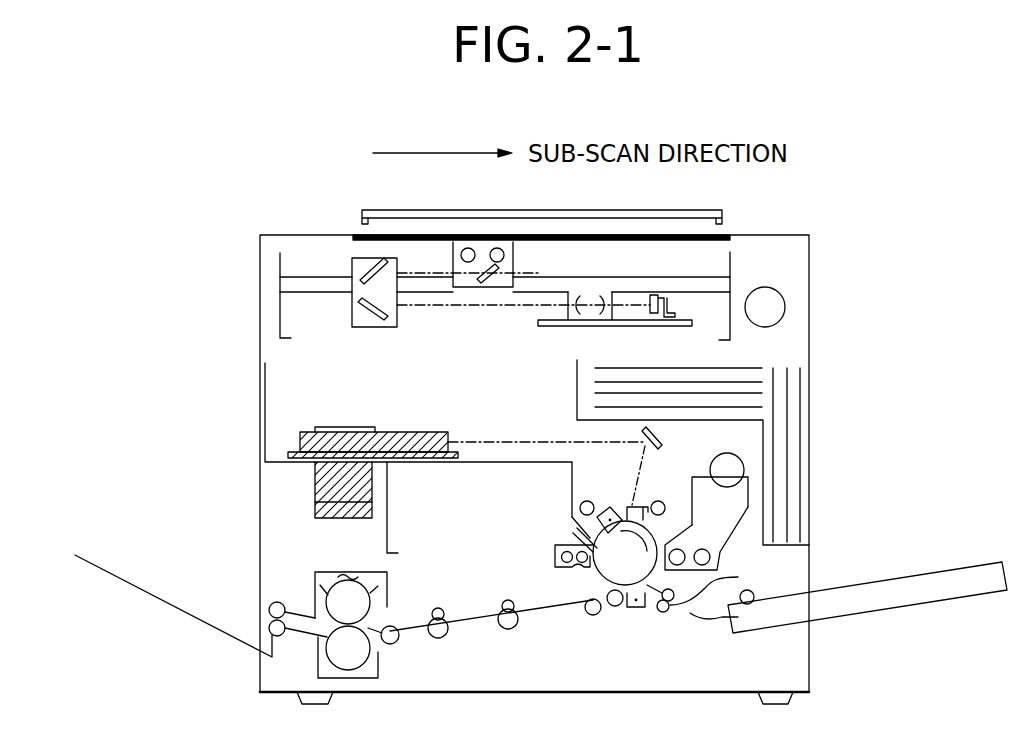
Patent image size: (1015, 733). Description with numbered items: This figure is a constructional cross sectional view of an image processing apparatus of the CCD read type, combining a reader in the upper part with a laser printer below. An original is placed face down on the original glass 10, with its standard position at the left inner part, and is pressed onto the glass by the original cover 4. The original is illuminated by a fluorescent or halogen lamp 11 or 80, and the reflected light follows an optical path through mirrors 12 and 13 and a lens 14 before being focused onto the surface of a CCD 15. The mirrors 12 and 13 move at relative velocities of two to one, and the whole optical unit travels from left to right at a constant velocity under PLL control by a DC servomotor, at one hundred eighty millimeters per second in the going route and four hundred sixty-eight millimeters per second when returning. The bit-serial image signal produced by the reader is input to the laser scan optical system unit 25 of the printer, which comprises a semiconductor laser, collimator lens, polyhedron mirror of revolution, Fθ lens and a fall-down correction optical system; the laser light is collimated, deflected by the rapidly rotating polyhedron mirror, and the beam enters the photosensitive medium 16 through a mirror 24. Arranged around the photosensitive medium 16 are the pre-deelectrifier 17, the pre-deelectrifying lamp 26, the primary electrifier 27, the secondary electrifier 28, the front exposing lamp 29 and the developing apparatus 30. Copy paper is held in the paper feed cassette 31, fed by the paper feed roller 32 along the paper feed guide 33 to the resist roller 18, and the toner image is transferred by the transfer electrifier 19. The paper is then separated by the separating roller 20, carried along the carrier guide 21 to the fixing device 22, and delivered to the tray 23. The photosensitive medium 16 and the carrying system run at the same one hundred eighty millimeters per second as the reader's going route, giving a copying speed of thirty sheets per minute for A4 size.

The original cover 4 is at (712, 210).
The original glass 10 is at (608, 234).
The fluorescent lamp 11 is at (466, 248).
The fluorescent lamp 80 is at (497, 248).
The mirror 12 is at (370, 262).
The mirror 13 is at (488, 283).
The lens 14 is at (594, 298).
The CCD 15 is at (664, 302).
The laser scan optical system unit 25 is at (432, 430).
The mirror 24 is at (662, 434).
The pre-deelectrifying lamp 26 is at (582, 498).
The pre-deelectrifier 17 is at (606, 505).
The primary electrifier 27 is at (620, 504).
The secondary electrifier 28 is at (652, 502).
The front exposing lamp 29 is at (666, 502).
The developing apparatus 30 is at (732, 537).
The photosensitive medium 16 is at (592, 572).
The separating roller 20 is at (602, 613).
The transfer electrifier 19 is at (638, 612).
The resist roller 18 is at (660, 617).
The paper feed guide 33 is at (697, 615).
The carrier guide 21 is at (535, 608).
The fixing device 22 is at (370, 595).
The discharge tray 23 is at (170, 603).
The paper feed cassette 31 is at (797, 590).
The paper feed roller 32 is at (753, 592).